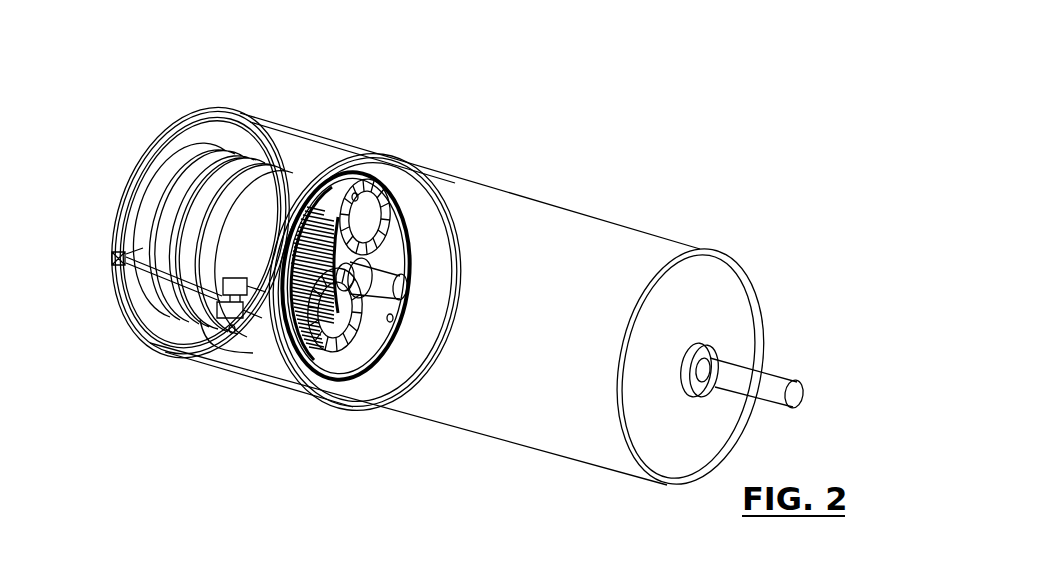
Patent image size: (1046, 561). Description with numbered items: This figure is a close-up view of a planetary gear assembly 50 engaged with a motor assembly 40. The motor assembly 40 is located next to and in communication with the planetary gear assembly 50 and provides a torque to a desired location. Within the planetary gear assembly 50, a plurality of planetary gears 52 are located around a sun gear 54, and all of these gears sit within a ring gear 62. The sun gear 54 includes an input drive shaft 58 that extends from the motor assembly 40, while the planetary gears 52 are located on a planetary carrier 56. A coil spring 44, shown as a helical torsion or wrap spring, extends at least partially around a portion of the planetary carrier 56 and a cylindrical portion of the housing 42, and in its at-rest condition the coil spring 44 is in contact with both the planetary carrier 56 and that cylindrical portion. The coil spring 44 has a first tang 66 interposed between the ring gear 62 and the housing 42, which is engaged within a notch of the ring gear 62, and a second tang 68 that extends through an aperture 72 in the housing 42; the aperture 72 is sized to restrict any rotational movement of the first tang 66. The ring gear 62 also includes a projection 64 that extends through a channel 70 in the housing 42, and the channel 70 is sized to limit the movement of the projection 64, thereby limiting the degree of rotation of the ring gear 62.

The motor assembly 40 is at (655, 237).
The housing 42 is at (280, 125).
The coil spring 44 is at (167, 180).
The planetary gear assembly 50 is at (350, 226).
The planetary gears 52 is at (355, 196).
The sun gear 54 is at (388, 232).
The planetary carrier 56 is at (290, 245).
The input drive shaft 58 is at (402, 289).
The ring gear 62 is at (396, 210).
The projection 64 is at (237, 280).
The first tang 66 is at (152, 346).
The second tang 68 is at (112, 275).
The channel 70 is at (262, 348).
The aperture 72 is at (114, 255).